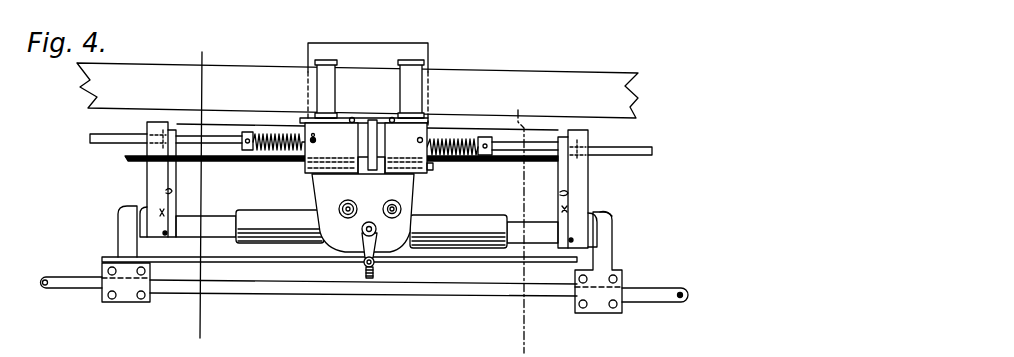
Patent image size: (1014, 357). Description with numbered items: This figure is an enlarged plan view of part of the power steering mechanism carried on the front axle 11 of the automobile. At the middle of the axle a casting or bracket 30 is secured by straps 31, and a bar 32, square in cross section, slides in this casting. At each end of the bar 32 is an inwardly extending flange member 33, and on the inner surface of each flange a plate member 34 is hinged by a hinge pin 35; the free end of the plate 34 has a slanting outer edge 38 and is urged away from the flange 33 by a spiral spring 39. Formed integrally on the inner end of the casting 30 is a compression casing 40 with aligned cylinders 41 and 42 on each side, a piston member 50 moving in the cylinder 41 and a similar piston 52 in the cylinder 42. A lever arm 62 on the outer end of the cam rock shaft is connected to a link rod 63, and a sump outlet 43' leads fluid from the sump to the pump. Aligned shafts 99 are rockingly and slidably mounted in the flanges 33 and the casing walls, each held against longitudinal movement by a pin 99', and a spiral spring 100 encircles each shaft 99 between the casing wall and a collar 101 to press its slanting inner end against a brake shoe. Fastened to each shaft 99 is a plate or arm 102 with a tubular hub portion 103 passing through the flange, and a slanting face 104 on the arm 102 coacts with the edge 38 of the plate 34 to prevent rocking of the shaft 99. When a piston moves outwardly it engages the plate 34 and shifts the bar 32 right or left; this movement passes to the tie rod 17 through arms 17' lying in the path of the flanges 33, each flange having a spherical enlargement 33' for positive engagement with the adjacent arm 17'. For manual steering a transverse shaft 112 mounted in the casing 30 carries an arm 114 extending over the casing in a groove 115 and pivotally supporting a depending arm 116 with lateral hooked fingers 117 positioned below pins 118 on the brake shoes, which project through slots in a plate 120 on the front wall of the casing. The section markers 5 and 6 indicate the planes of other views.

The front axle 11 is at (100, 80).
The tie rod 17 is at (358, 285).
The arms 17' is at (368, 262).
The casting or bracket 30 is at (368, 85).
The straps 31 is at (325, 78).
The bar 32 is at (212, 124).
The flange member 33 is at (368, 185).
The spherical enlargement 33' is at (368, 229).
The plate member 34 is at (143, 210).
The hinge pin 35 is at (164, 236).
The slanting outer edge 38 is at (172, 192).
The spiral spring 39 is at (611, 214).
The compression casing 40 is at (408, 197).
The cylinder 41 is at (493, 211).
The cylinder 42 is at (243, 210).
The sump outlet 43' is at (361, 294).
The piston member 50 is at (532, 232).
The piston 52 is at (206, 226).
The lever arm 62 is at (373, 247).
The link rod 63 is at (267, 263).
The shafts 99 is at (371, 136).
The pin 99' is at (371, 110).
The spiral spring 100 is at (448, 138).
The collar 101 is at (247, 132).
The plate or arm 102 is at (171, 176).
The tubular hub portion 103 is at (162, 122).
The slanting outer surface portion 104 is at (173, 190).
The transverse shaft 112 is at (222, 161).
The arm 114 is at (368, 140).
The groove 115 is at (378, 147).
The depending arm 116 is at (382, 119).
The hooked fingers 117 is at (331, 138).
The pins 118 is at (352, 118).
The plate 120 is at (392, 117).
The section line 5 is at (214, 52).
The section line 6 is at (540, 107).